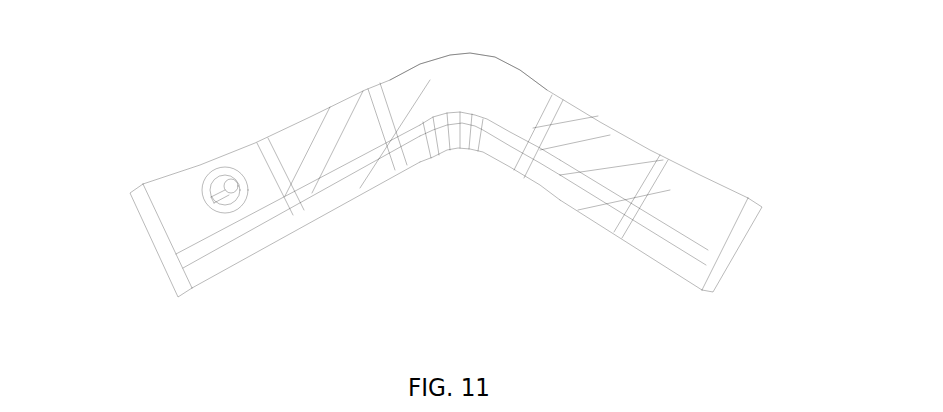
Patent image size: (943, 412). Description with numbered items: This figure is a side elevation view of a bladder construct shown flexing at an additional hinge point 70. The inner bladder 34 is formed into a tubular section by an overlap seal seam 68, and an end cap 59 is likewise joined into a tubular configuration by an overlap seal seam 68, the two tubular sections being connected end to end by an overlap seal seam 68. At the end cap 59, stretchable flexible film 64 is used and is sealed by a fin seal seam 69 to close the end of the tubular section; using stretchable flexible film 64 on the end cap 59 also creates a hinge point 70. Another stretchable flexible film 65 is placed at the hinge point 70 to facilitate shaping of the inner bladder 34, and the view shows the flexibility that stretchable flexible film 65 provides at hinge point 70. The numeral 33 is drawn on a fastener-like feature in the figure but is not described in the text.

The fastener 33 is at (224, 166).
The inner bladder 34 is at (310, 127).
The end cap 59 is at (157, 182).
The stretchable flexible film 64 is at (220, 260).
The stretchable flexible film 65 is at (500, 84).
The overlap seal seam 68 is at (377, 100).
The fin seal seam 69 is at (162, 239).
The hinge point 70 is at (458, 152).